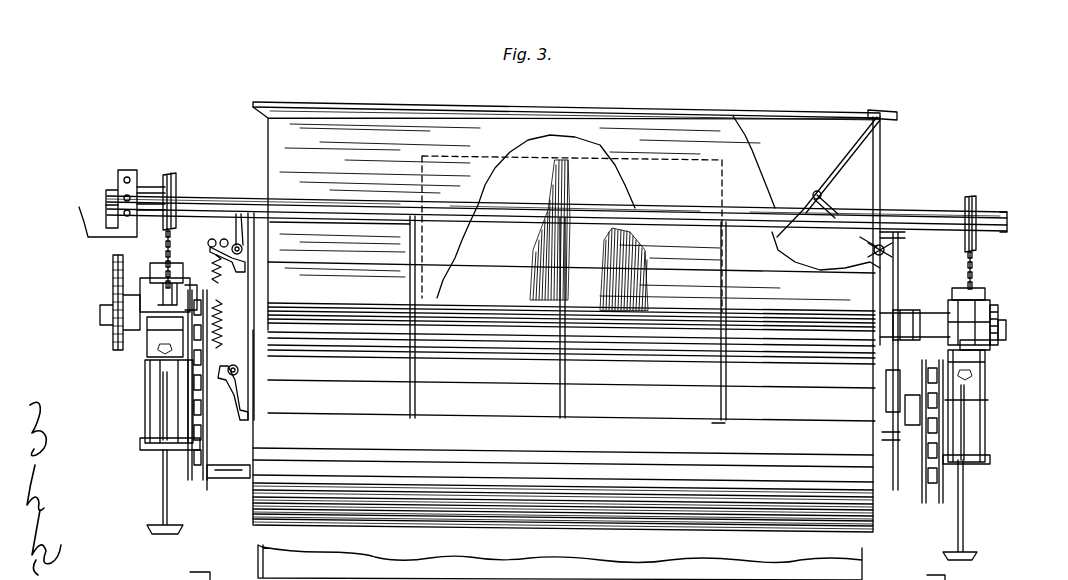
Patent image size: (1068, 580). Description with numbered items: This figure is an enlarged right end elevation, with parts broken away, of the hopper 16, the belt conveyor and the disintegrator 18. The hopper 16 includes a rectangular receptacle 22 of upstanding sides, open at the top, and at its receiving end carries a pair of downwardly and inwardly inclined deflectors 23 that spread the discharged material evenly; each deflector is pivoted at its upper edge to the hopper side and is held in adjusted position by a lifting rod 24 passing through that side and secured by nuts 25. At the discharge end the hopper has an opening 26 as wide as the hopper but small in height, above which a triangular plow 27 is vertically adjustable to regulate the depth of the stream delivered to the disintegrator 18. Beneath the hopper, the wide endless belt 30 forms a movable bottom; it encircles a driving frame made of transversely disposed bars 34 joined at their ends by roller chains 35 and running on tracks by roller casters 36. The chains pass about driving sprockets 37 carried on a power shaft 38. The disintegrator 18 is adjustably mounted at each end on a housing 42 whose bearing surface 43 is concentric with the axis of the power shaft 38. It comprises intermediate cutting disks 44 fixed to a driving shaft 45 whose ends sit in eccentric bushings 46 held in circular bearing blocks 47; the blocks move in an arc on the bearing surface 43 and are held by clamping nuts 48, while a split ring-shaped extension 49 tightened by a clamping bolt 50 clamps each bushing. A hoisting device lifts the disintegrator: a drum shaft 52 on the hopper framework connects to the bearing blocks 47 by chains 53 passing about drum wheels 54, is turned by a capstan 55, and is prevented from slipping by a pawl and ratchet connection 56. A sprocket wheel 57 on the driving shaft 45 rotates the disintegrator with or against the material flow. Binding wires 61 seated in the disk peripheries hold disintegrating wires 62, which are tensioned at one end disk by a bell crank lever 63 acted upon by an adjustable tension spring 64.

The hopper side board 16 is at (345, 130).
The disintegrator 18 is at (720, 424).
The rectangular receptacle 22 is at (715, 140).
The deflector 23 is at (836, 170).
The lifting rod 24 is at (832, 208).
The nuts 25 is at (893, 250).
The opening 26 is at (858, 345).
The plow 27 is at (571, 235).
The endless material-receiving belt 30 is at (576, 442).
The transversely disposed bars 34 is at (232, 479).
The roller chains 35 is at (186, 455).
The roller casters 36 is at (208, 434).
The driving sprockets 37 is at (195, 405).
The power shaft 38 is at (898, 412).
The housing 42 is at (148, 372).
The bearing surface 43 is at (984, 442).
The cutting disks 44 is at (416, 396).
The driving shaft 45 is at (1000, 325).
The eccentric bushing 46 is at (135, 285).
The circular bearing block 47 is at (155, 335).
The clamping nuts 48 is at (986, 376).
The split ring-shaped extension 49 is at (1007, 331).
The clamping bolt 50 is at (982, 298).
The drum shaft 52 is at (247, 197).
The chains 53 is at (171, 242).
The drum wheels 54 is at (173, 190).
The capstan 55 is at (129, 172).
The pawl and ratchet connection 56 is at (112, 180).
The sprocket wheel 57 is at (112, 350).
The binding wires 61 is at (408, 392).
The disintegrating wires 62 is at (500, 270).
The bell crank lever 63 is at (234, 222).
The adjustable tension spring 64 is at (214, 266).